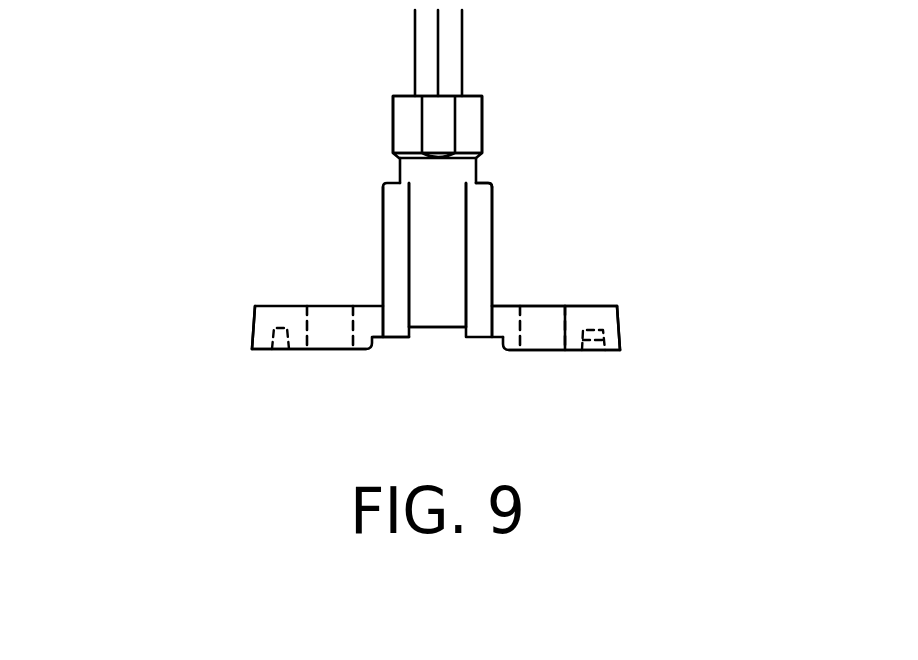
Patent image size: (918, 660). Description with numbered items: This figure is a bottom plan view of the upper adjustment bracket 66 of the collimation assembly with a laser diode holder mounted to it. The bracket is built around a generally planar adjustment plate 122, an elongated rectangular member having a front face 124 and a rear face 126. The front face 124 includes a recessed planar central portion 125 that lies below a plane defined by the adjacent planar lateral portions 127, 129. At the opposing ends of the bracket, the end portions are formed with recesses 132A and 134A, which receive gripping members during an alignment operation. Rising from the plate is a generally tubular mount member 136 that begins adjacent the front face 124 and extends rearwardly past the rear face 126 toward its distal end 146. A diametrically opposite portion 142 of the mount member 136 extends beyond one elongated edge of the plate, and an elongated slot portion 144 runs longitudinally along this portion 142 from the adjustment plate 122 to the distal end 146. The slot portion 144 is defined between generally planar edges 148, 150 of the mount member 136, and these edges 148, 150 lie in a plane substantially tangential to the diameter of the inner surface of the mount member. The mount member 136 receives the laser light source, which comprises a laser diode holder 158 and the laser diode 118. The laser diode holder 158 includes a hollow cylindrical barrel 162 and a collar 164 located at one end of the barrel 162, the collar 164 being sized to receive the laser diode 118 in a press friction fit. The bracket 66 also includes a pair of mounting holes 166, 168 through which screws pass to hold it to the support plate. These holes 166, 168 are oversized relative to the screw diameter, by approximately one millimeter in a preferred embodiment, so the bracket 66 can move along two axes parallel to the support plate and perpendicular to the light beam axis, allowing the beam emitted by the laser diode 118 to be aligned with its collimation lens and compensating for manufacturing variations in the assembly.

The laser diode 118 is at (466, 95).
The collar 164 is at (392, 116).
The laser diode holder 158 is at (496, 114).
The distal end of the mount member 146 is at (492, 186).
The mount member 136 is at (522, 207).
The diametrically opposite portion of the mount member 142 is at (395, 250).
The slot portion 144 is at (420, 233).
The rear face 126 is at (612, 283).
The planar edge of the mount member 148 is at (485, 245).
The recess 134A is at (272, 330).
The planar edge of the mount member 150 is at (395, 283).
The barrel 162 is at (447, 286).
The upper adjustment bracket 66 is at (648, 310).
The adjustment plate 122 is at (212, 334).
The recess 132A is at (605, 340).
The planar lateral portion 129 is at (259, 349).
The mounting hole 168 is at (327, 350).
The recessed planar central portion 125 is at (395, 338).
The mounting hole 166 is at (540, 352).
The planar lateral portion 127 is at (573, 352).
The front face 124 is at (633, 386).